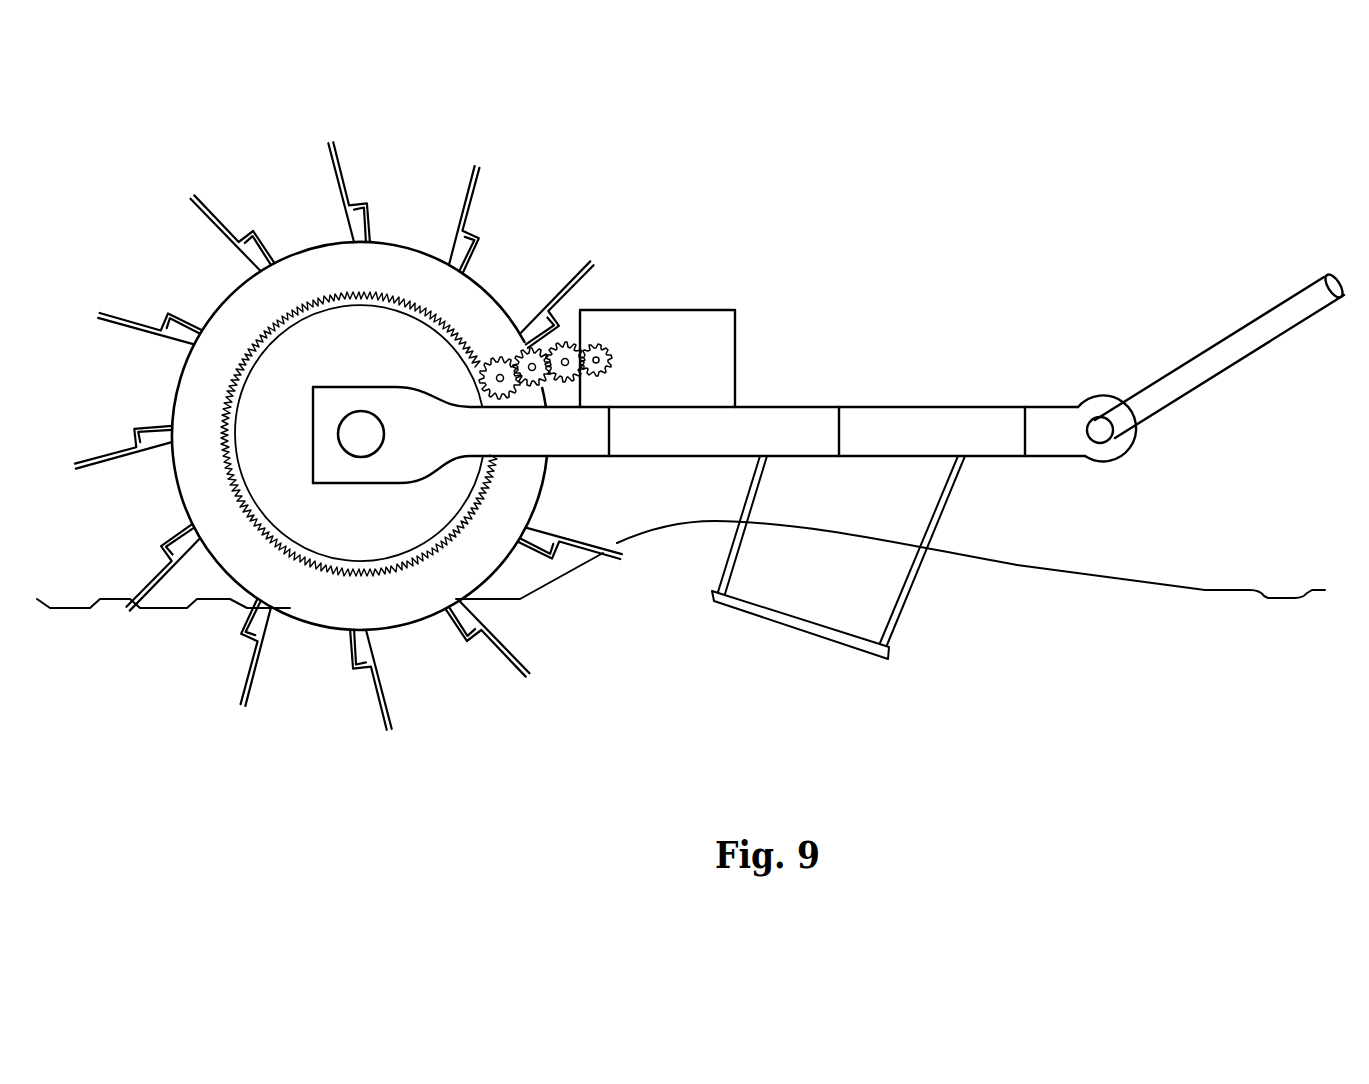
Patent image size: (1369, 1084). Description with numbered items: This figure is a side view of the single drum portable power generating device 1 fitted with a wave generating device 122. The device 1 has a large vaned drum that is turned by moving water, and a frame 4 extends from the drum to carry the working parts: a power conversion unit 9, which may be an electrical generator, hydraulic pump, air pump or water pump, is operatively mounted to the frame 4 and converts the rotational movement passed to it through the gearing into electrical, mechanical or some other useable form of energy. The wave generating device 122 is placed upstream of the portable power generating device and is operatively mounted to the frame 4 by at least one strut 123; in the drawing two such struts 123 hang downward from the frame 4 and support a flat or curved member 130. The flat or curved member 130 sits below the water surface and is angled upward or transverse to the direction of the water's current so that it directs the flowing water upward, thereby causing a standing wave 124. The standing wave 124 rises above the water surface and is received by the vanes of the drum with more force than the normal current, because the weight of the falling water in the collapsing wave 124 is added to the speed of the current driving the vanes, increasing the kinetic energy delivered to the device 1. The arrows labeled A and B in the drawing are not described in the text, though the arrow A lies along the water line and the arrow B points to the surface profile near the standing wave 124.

The single drum portable power generating device 1 is at (710, 460).
The frame 4 is at (992, 410).
The power conversion unit 9 is at (742, 367).
The wave generating device 122 is at (809, 632).
The strut 123 is at (749, 482).
The flat or curved member 130 is at (865, 653).
The standing wave 124 is at (697, 525).
The direction of travel A is at (1035, 626).
The ground surface B is at (890, 622).